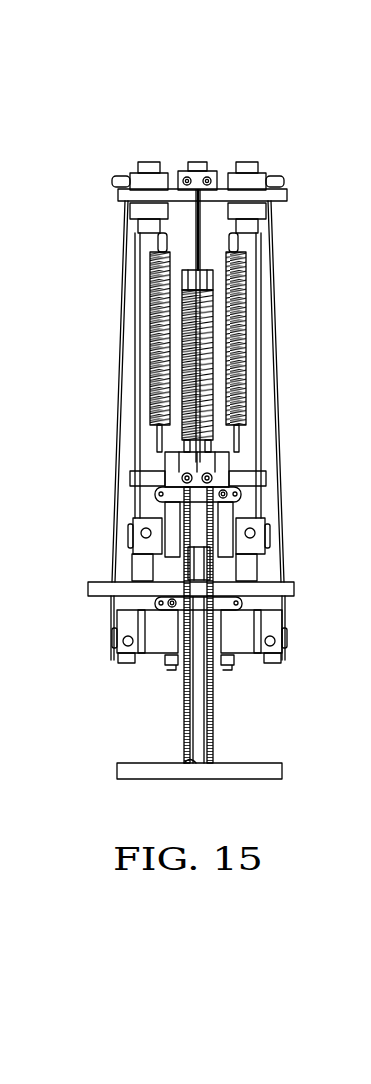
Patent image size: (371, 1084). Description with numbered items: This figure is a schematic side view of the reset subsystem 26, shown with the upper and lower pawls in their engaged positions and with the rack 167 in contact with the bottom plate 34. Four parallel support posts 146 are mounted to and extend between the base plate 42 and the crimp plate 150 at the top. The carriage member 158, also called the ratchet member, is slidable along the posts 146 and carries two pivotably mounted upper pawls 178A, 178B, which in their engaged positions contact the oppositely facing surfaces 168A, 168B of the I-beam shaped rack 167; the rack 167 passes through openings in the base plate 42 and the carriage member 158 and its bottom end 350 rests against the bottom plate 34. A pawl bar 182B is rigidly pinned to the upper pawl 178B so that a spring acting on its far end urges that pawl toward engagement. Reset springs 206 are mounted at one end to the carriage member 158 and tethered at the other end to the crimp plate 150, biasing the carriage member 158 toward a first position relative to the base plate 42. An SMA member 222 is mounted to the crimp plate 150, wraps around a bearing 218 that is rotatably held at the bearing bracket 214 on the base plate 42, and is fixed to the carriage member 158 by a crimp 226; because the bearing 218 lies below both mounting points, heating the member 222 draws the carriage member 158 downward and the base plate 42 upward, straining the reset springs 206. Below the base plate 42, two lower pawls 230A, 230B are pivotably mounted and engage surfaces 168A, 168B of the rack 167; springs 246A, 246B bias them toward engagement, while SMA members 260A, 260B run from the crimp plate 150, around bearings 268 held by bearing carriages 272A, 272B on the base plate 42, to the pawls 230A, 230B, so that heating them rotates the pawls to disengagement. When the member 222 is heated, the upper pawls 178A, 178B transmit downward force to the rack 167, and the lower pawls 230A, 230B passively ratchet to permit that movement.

The reset subsystem 26 is at (268, 108).
The crimp plate 150 is at (229, 190).
The SMA member 222 is at (195, 228).
The SMA member 260A is at (125, 250).
The SMA member 260B is at (275, 290).
The spring 246B is at (158, 327).
The spring 246A is at (236, 338).
The reset springs 206 is at (186, 355).
The crimp 226 is at (185, 477).
The carriage member 158 is at (268, 488).
The pawl bar 182B is at (170, 493).
The upper pawl 178A is at (172, 522).
The upper pawl 178B is at (262, 500).
The bearing 218 is at (228, 523).
The support posts 146 is at (143, 560).
The bearing bracket 214 is at (180, 562).
The base plate 42 is at (296, 581).
The bearing 268 is at (115, 643).
The bearing carriage 272A is at (118, 655).
The bearing carriage 272B is at (277, 655).
The lower pawl 230A is at (172, 648).
The lower pawl 230B is at (223, 648).
The surface 168A is at (183, 741).
The surface 168B is at (213, 700).
The rack 167 is at (203, 730).
The bottom end 350 is at (193, 767).
The bottom plate 34 is at (200, 781).